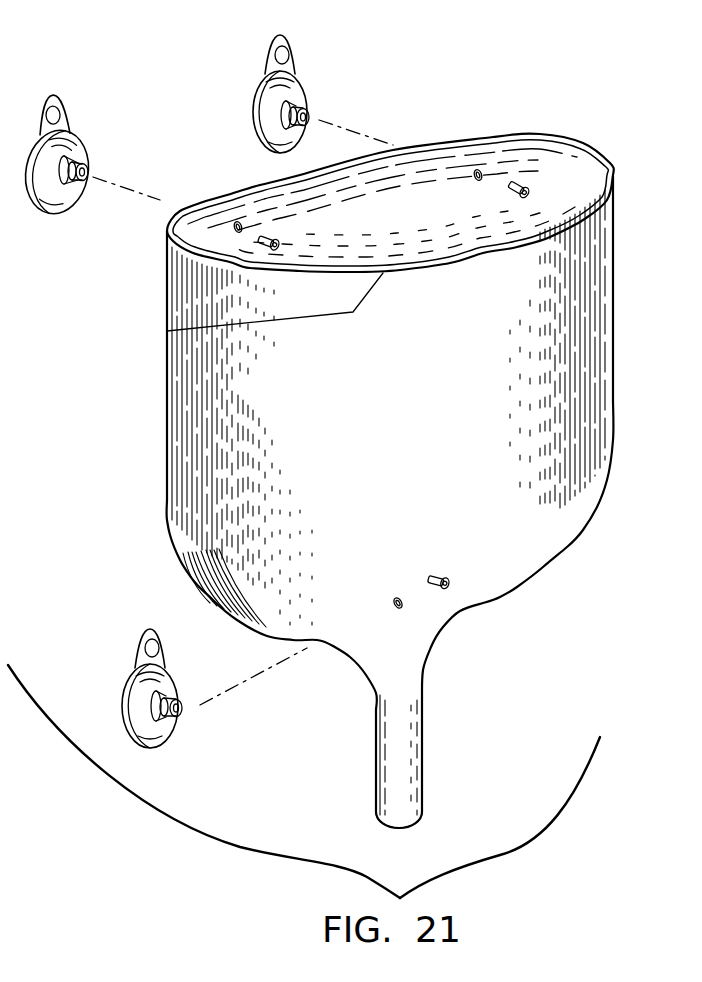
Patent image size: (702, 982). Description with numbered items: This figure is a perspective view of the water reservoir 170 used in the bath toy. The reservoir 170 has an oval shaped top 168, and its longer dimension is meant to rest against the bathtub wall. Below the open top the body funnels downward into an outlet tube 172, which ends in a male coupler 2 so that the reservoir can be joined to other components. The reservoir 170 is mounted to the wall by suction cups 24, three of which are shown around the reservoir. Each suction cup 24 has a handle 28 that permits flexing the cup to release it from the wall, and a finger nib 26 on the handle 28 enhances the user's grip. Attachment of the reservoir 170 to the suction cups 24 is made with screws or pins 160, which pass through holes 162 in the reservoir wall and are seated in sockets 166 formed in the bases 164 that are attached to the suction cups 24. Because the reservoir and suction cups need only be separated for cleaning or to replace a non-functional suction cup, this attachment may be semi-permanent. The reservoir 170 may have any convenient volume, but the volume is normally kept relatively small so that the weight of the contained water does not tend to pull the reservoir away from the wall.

The male coupler 2 is at (422, 822).
The suction cup 24 is at (222, 413).
The finger nib 26 is at (97, 133).
The handle 28 is at (288, 37).
The screws or pins 160 is at (260, 239).
The holes 162 is at (236, 220).
The bases 164 is at (310, 110).
The sockets 166 is at (84, 169).
The oval shaped top 168 is at (167, 331).
The water reservoir 170 is at (130, 443).
The outlet tube 172 is at (423, 742).